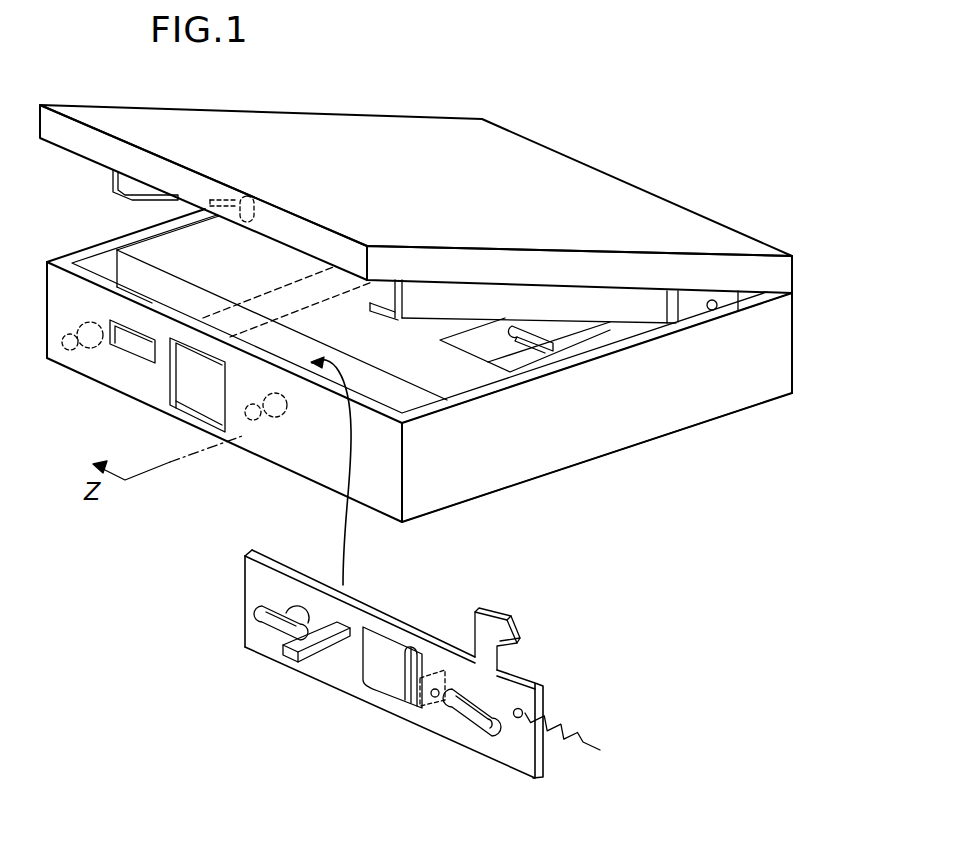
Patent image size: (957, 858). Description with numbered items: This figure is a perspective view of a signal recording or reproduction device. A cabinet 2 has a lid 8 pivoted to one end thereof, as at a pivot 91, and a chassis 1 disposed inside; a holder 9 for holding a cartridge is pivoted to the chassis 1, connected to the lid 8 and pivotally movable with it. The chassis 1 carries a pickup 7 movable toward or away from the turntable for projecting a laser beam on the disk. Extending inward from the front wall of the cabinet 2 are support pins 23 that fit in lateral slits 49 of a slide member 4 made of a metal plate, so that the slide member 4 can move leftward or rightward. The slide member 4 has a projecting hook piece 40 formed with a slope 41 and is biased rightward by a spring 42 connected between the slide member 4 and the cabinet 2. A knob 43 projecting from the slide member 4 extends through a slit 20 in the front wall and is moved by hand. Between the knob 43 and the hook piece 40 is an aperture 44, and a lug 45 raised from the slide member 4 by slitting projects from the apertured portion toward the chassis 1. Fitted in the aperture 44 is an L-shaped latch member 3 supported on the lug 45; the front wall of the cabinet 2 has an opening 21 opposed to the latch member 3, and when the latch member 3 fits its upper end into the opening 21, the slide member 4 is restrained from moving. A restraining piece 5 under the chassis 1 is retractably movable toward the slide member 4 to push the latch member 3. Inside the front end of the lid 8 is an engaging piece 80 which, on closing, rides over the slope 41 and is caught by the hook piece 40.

The chassis 1 is at (419, 372).
The cabinet 2 is at (732, 378).
The latch member 3 is at (395, 685).
The slide member 4 is at (497, 748).
The restraining piece 5 is at (268, 298).
The pickup 7 is at (553, 331).
The lid 8 is at (374, 138).
The holder 9 is at (562, 296).
The slit 20 is at (135, 333).
The opening 21 is at (175, 383).
The support pin 23 is at (74, 318).
The hook piece 40 is at (495, 624).
The slope 41 is at (515, 636).
The spring 42 is at (587, 738).
The knob 43 is at (318, 657).
The aperture 44 is at (398, 650).
The lug 45 is at (452, 668).
The lateral slit 49 is at (273, 617).
The engaging piece 80 is at (249, 196).
The pivot 91 is at (716, 301).